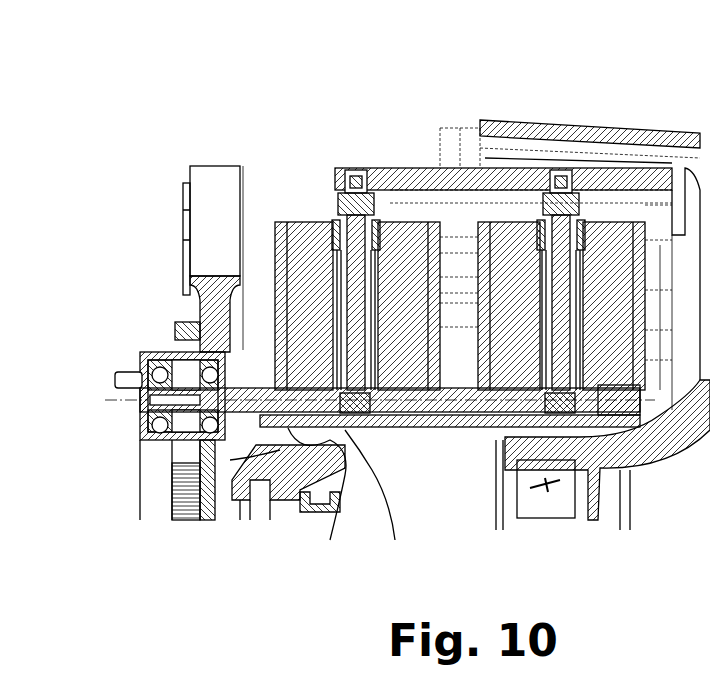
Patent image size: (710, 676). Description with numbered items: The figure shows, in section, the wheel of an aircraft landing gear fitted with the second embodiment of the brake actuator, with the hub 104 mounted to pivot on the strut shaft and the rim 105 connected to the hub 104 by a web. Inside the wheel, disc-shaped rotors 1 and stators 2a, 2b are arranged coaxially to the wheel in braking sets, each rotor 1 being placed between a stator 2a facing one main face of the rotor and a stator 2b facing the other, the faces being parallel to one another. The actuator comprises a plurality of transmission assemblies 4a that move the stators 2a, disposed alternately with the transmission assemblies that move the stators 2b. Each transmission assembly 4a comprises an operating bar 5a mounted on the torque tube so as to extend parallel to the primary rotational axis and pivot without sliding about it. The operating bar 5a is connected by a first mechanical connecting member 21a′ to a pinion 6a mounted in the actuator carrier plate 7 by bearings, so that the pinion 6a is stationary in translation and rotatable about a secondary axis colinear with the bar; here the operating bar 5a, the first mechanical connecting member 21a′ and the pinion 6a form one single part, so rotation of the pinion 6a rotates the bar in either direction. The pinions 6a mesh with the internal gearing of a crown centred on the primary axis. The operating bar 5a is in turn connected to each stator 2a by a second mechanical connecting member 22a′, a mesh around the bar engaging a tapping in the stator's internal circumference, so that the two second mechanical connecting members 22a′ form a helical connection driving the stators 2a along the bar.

The rotor 1 is at (330, 200).
The stator 2a is at (325, 393).
The stator 2b is at (410, 220).
The transmission assembly 4a is at (150, 292).
The operating bar 5a is at (265, 500).
The pinion 6a is at (176, 338).
The actuator carrier plate 7 is at (300, 510).
The first mechanical connecting member 21a′ is at (148, 428).
The second mechanical connecting member 22a′ is at (228, 470).
The hub 104 is at (636, 465).
The rim 105 is at (575, 125).